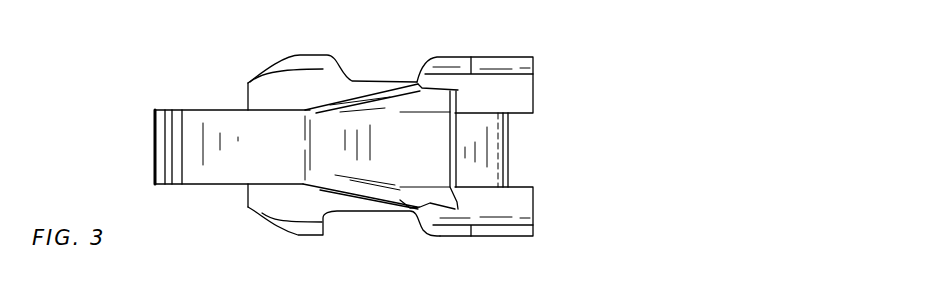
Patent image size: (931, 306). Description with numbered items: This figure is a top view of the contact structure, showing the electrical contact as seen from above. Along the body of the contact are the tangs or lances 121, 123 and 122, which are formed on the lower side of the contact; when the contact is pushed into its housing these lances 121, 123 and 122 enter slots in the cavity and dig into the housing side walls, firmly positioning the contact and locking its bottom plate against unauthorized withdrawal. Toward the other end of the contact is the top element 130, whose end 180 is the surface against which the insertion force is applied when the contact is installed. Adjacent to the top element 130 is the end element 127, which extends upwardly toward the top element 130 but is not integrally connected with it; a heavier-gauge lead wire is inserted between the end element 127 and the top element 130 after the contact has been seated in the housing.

The lance 121 is at (450, 240).
The lance 122 is at (310, 77).
The lance 123 is at (312, 228).
The end element 127 is at (508, 170).
The top element 130 is at (428, 147).
The end 180 is at (450, 150).